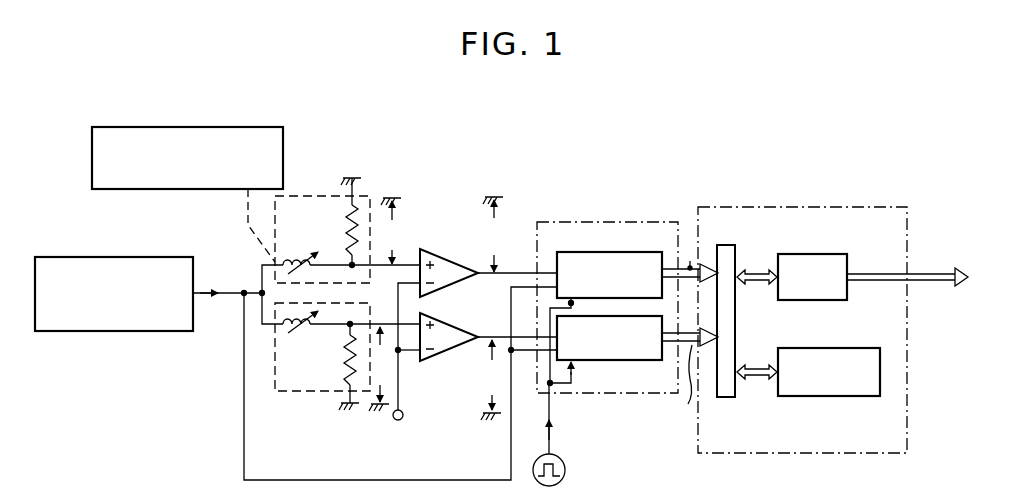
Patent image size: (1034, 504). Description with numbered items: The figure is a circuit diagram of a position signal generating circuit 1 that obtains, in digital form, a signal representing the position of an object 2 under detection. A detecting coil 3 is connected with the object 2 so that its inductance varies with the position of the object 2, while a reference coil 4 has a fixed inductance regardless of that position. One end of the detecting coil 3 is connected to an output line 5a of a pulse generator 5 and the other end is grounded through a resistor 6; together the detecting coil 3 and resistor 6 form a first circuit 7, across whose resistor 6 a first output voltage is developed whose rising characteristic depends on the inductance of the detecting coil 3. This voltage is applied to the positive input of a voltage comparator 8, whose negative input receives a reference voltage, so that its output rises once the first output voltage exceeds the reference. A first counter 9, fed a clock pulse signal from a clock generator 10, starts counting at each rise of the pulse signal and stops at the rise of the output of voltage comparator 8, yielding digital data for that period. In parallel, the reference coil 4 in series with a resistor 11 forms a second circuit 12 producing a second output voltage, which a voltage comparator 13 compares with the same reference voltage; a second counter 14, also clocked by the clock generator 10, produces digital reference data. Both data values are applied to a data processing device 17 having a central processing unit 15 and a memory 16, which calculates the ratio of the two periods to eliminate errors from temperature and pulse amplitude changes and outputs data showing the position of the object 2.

The position signal generating circuit 1 is at (656, 184).
The object 2 is at (185, 127).
The detecting coil 3 is at (300, 256).
The reference coil 4 is at (300, 329).
The pulse generator 5 is at (114, 259).
The output line 5a is at (210, 295).
The resistor 6 is at (342, 217).
The first circuit 7 is at (304, 196).
The voltage comparator 8 is at (448, 262).
The first counter 9 is at (620, 253).
The clock generator 10 is at (566, 470).
The resistor 11 is at (343, 359).
The second circuit 12 is at (326, 394).
The voltage comparator 13 is at (457, 353).
The second counter 14 is at (612, 360).
The central processing unit 15 is at (799, 254).
The memory 16 is at (839, 348).
The data processing device 17 is at (852, 348).